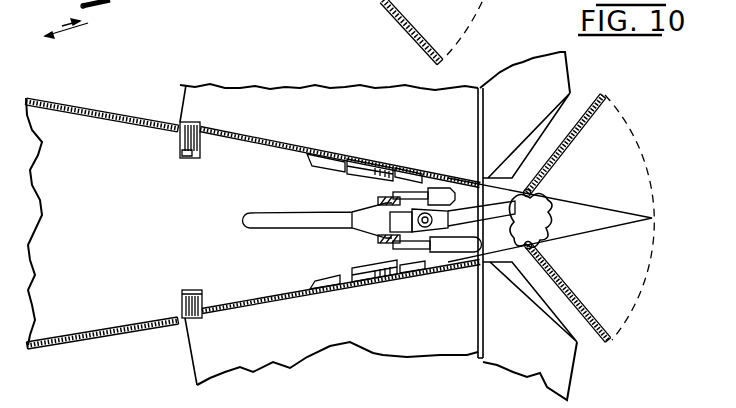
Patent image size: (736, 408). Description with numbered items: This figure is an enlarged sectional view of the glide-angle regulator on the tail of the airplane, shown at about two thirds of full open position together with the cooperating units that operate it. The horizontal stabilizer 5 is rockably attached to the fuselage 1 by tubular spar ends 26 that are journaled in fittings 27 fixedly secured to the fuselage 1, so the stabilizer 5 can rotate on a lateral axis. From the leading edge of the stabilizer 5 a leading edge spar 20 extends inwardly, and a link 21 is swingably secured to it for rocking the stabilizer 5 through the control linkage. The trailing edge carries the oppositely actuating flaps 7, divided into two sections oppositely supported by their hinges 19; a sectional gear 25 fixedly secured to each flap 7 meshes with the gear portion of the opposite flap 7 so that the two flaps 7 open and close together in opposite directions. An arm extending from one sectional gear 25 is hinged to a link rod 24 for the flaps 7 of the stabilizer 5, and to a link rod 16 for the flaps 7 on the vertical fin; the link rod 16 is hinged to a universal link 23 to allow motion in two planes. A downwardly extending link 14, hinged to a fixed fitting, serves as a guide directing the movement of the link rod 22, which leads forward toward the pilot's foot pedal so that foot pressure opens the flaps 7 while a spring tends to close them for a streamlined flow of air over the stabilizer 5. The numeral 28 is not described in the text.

The fuselage 1 is at (84, 313).
The horizontal stabilizer 5 is at (304, 104).
The oppositely actuating flaps 7 is at (520, 73).
The downwardly extending link 14 is at (385, 197).
The link rod 16 is at (483, 208).
The hinges 19 is at (475, 92).
The leading edge spar 20 is at (181, 143).
The link 21 is at (183, 158).
The link rod 22 is at (262, 217).
The universal link 23 is at (392, 223).
The link rod 24 is at (451, 192).
The sectional gear 25 is at (544, 226).
The tubular spar ends 26 is at (357, 163).
The fittings 27 is at (336, 280).
The direction of movement 28 is at (61, 21).